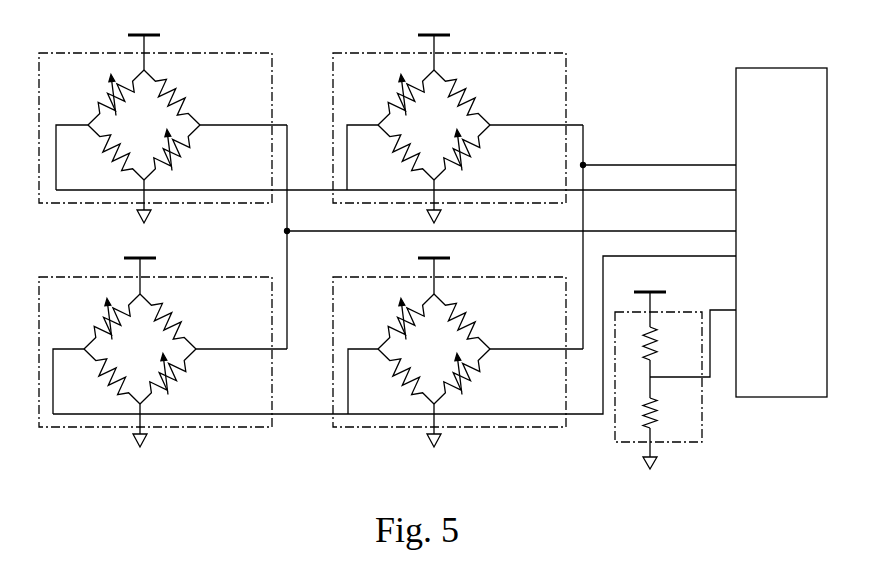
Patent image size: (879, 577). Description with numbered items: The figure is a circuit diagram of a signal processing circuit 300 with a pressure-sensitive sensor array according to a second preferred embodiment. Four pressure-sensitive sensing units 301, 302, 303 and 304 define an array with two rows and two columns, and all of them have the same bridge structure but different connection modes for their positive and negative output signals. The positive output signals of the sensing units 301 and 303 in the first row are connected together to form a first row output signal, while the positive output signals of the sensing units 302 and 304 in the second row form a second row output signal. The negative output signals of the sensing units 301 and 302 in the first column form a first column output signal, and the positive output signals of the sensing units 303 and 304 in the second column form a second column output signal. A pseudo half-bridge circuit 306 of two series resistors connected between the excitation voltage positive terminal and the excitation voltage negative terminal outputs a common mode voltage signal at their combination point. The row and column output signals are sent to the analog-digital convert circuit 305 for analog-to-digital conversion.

The signal processing circuit 300 is at (60, 21).
The pressure-sensitive sensing unit 301 is at (218, 53).
The pressure-sensitive sensing unit 302 is at (228, 277).
The pressure-sensitive sensing unit 303 is at (523, 53).
The pressure-sensitive sensing unit 304 is at (523, 277).
The analog-digital convert circuit 305 is at (763, 68).
The voltage divider circuit 306 is at (668, 312).